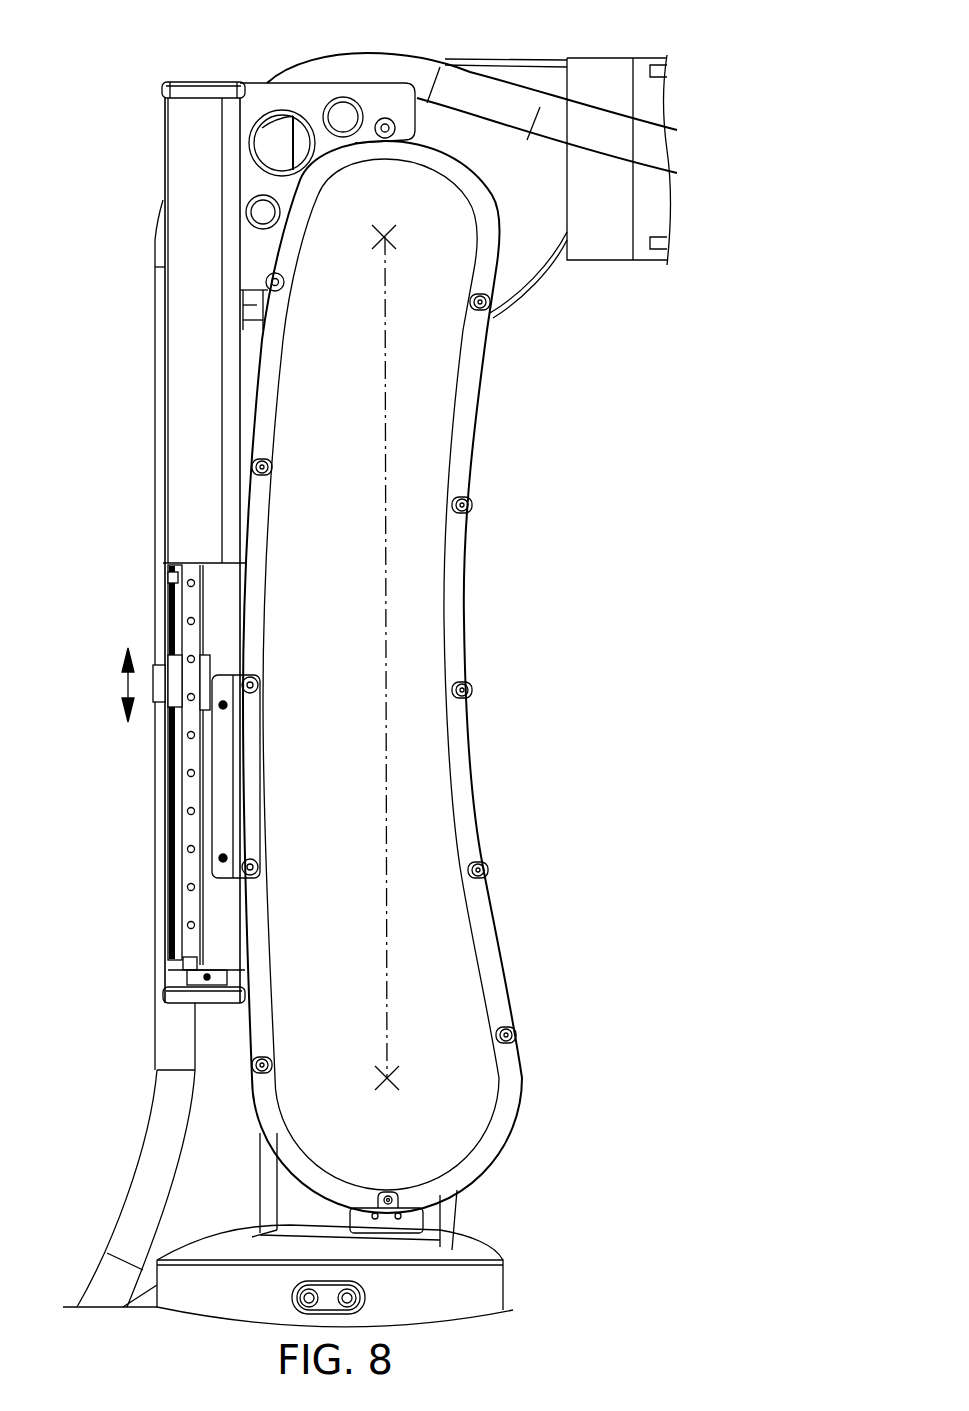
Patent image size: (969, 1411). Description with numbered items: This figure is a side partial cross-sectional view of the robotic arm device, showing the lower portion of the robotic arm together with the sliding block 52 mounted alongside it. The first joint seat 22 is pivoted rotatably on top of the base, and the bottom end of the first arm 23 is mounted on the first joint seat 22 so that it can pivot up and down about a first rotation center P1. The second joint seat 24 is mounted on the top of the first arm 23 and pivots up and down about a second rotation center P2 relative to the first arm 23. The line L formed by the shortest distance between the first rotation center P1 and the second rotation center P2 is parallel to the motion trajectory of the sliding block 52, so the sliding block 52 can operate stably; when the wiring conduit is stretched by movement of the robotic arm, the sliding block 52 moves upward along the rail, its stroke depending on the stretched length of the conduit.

The first joint seat 22 is at (435, 1217).
The first arm 23 is at (510, 977).
The second joint seat 24 is at (518, 83).
The sliding block 52 is at (178, 660).
The first rotation center P1 is at (387, 1078).
The second rotation center P2 is at (384, 237).
The line L is at (388, 593).